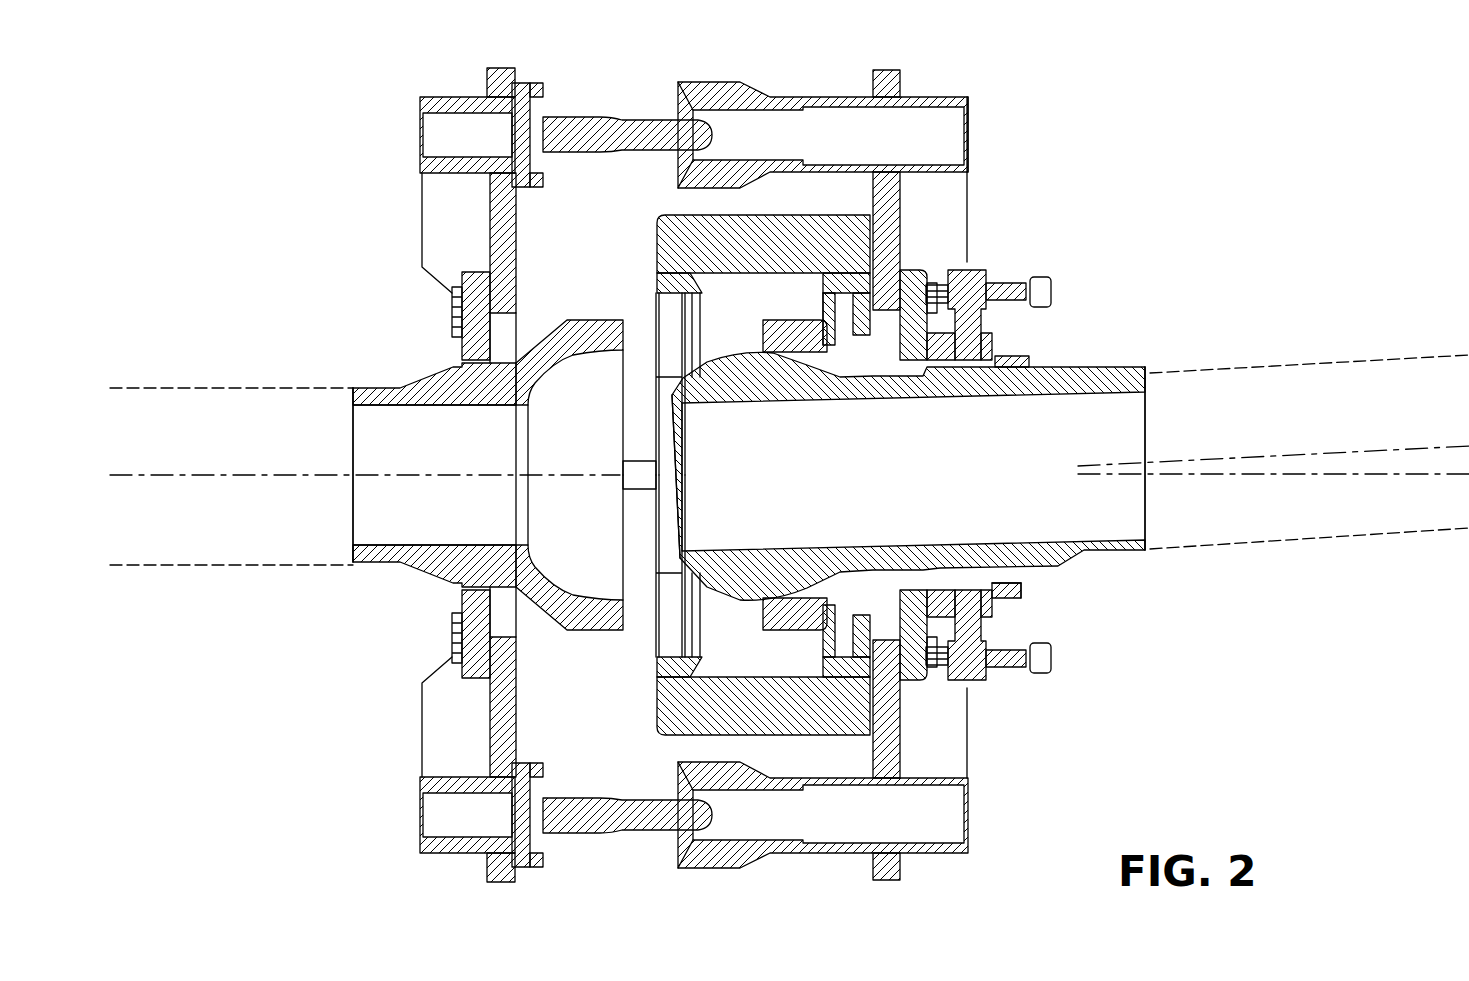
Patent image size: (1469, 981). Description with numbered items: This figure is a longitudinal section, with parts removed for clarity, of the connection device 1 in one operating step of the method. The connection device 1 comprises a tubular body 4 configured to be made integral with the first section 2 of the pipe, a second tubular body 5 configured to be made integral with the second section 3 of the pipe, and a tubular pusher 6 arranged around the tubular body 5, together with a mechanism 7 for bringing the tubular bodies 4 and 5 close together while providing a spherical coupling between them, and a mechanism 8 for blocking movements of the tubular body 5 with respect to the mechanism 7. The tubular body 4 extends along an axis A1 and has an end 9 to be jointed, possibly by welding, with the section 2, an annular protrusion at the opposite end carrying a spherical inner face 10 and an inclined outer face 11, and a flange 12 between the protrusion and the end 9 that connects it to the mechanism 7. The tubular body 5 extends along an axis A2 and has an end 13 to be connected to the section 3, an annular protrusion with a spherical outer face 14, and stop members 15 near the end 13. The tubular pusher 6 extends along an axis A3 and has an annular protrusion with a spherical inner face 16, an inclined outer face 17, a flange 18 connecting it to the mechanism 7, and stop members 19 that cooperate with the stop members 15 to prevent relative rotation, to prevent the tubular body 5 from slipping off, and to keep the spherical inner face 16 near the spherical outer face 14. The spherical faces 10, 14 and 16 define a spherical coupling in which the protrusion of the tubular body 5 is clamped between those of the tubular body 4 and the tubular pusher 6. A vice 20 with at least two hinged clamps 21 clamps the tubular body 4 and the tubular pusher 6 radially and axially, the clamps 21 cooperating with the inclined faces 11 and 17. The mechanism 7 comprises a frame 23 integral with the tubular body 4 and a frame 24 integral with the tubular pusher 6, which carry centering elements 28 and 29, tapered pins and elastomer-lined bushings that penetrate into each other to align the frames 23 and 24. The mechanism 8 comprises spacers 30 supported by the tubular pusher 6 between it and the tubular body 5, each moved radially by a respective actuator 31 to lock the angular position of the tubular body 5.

The connection device 1 is at (1211, 176).
The first section of the pipe 2 is at (200, 378).
The second section of the pipe 3 is at (1312, 385).
The tubular body 4 is at (430, 388).
The second tubular body 5 is at (1040, 368).
The tubular pusher 6 is at (857, 296).
The mechanism 7 is at (1033, 179).
The mechanism 8 is at (1050, 609).
The end 9 is at (345, 414).
The spherical inner face 10 is at (594, 374).
The inclined outer face 11 is at (553, 322).
The flange 12 is at (452, 312).
The end 13 is at (1160, 374).
The spherical outer face 14 is at (722, 340).
The stop members 15 is at (1012, 357).
The spherical inner face 16 is at (783, 574).
The inclined outer face 17 is at (836, 629).
The flange 18 is at (945, 652).
The stop members 19 is at (1022, 592).
The vice 20 is at (815, 198).
The clamps 21 is at (626, 119).
The frame 23 is at (513, 230).
The frame 24 is at (905, 185).
The centering elements 28 is at (570, 117).
The centering elements 29 is at (798, 82).
The spacers 30 is at (975, 322).
The actuator 31 is at (1014, 276).
The axis A1 is at (280, 473).
The axis A2 is at (1315, 457).
The axis A3 is at (1325, 488).